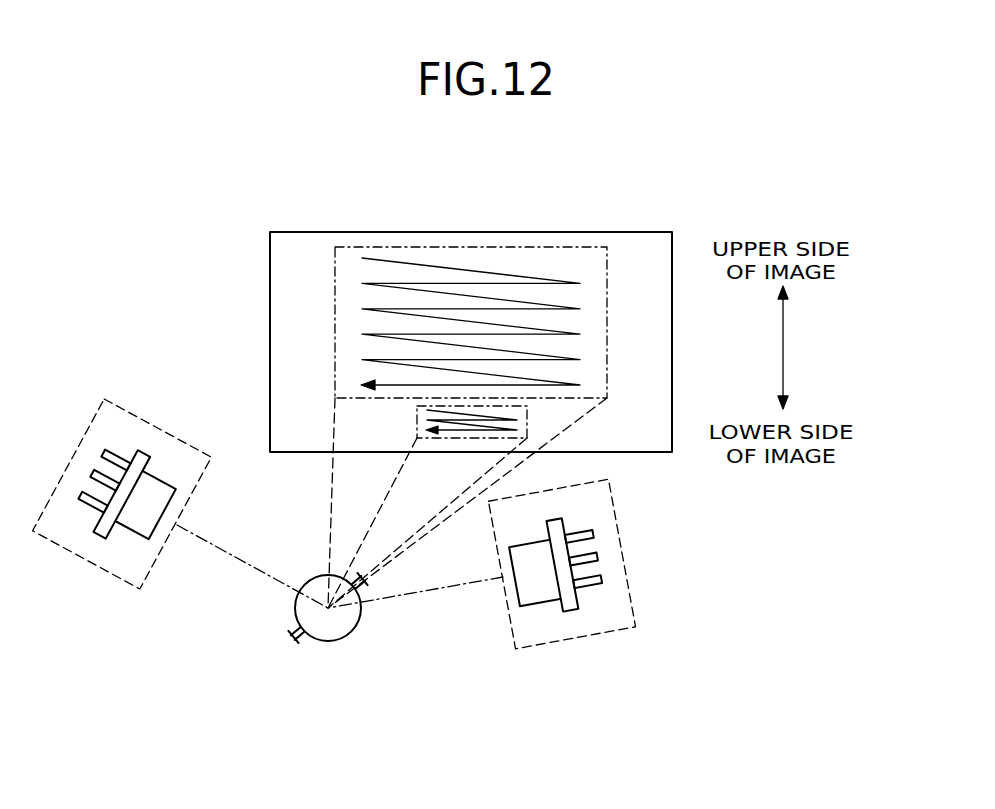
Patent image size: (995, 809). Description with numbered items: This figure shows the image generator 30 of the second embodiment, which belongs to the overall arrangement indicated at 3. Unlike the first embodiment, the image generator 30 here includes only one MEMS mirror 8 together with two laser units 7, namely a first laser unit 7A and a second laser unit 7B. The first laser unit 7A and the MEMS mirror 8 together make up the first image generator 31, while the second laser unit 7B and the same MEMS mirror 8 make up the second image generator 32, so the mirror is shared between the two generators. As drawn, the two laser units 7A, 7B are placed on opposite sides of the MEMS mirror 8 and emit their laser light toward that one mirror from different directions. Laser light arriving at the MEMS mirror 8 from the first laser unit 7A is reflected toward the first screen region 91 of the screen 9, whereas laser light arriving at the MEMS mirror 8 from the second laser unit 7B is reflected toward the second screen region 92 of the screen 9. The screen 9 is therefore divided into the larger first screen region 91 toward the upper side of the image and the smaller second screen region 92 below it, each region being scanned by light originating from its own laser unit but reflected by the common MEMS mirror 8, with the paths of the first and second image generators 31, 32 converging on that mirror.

The image display apparatus 3 is at (257, 176).
The image generator 30 is at (194, 312).
The screen 9 is at (647, 232).
The first screen region 91 is at (585, 247).
The second screen region 92 is at (417, 424).
The first image generator 31 is at (254, 555).
The second image generator 32 is at (436, 602).
The MEMS mirror 8 is at (368, 632).
The laser units 7 is at (572, 716).
The first laser unit 7A is at (132, 592).
The second laser unit 7B is at (550, 648).